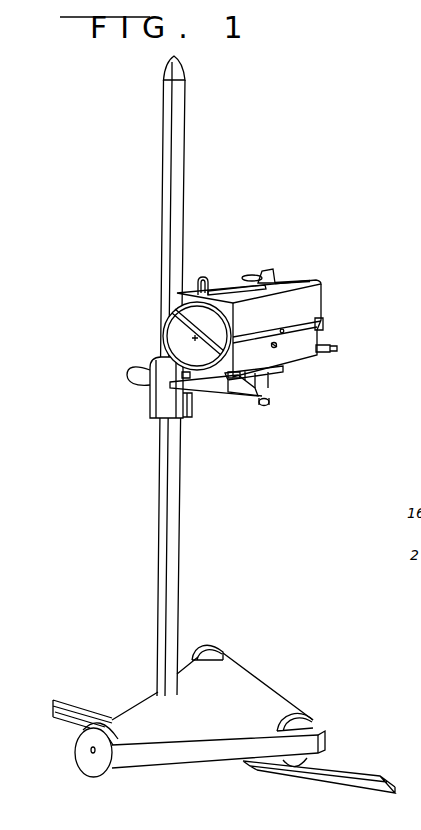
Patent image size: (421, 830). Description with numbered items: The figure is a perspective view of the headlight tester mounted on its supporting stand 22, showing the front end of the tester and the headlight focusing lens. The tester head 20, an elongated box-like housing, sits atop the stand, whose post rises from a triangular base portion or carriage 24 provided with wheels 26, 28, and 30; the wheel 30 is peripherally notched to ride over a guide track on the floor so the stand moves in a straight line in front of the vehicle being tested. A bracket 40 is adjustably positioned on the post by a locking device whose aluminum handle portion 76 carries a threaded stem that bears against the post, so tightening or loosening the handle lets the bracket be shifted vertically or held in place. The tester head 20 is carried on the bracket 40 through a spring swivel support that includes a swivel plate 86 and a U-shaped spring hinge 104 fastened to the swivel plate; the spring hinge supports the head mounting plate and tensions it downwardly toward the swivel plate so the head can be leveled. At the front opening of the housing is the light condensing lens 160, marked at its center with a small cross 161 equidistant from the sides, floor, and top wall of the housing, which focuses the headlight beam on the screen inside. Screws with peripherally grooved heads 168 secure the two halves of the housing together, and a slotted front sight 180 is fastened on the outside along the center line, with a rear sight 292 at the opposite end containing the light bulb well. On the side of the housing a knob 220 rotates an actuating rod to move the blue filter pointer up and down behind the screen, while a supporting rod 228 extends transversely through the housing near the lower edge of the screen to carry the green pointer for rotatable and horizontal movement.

The tester head 20 is at (323, 313).
The supporting stand 22 is at (158, 462).
The triangular base portion or carriage 24 is at (146, 700).
The wheel 26 is at (93, 765).
The wheel 28 is at (220, 653).
The wheel 30 is at (316, 720).
The bracket 40 is at (243, 396).
The handle portion 76 is at (140, 378).
The swivel plate 86 is at (275, 387).
The U-shaped spring hinge 104 is at (248, 384).
The light condensing lens 160 is at (182, 347).
The small cross 161 is at (195, 338).
The peripherally grooved heads 168 is at (325, 327).
The slotted front sight 180 is at (207, 277).
The knob 220 is at (278, 349).
The supporting rod 228 is at (338, 349).
The rear sight 292 is at (267, 278).